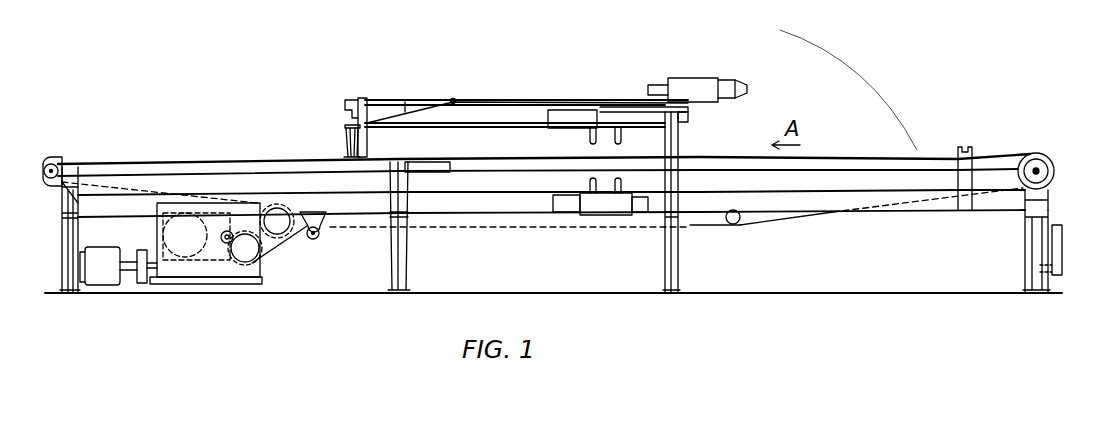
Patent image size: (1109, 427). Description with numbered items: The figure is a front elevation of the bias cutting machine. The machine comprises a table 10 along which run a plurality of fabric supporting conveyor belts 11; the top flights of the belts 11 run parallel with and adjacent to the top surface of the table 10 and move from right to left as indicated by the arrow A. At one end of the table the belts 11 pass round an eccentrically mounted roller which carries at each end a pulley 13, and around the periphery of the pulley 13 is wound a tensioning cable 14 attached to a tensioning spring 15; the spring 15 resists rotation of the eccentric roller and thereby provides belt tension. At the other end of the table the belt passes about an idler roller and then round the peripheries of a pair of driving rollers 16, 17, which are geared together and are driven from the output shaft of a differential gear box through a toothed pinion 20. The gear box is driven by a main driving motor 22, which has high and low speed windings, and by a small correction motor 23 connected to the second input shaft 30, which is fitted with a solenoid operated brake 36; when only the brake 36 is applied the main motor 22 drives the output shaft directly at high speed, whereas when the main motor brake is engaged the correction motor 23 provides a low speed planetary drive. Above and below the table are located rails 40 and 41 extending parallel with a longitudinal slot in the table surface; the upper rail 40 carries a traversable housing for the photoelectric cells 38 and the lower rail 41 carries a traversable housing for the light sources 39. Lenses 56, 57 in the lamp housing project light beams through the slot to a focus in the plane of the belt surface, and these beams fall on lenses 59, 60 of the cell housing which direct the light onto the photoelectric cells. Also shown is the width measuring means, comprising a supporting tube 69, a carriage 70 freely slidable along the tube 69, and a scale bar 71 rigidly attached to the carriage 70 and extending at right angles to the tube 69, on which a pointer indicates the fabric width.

The table 10 is at (167, 170).
The fabric supporting conveyor belts 11 is at (226, 155).
The pulley 13 is at (1027, 155).
The tensioning cable 14 is at (1057, 215).
The tensioning spring 15 is at (1057, 273).
The driving roller 16 is at (274, 238).
The driving roller 17 is at (247, 263).
The toothed pinion 20 is at (222, 245).
The main driving motor 22 is at (173, 228).
The correction motor 23 is at (100, 273).
The second input shaft 30 is at (148, 256).
The solenoid operated brake 36 is at (139, 284).
The photoelectric cells 38 is at (588, 118).
The light sources 39 is at (605, 202).
The upper rail 40 is at (457, 118).
The lower rail 41 is at (572, 205).
The lens 56 is at (590, 184).
The lens 57 is at (621, 184).
The lens 59 is at (590, 137).
The lens 60 is at (621, 137).
The supporting tube 69 is at (738, 90).
The carriage 70 is at (695, 83).
The scale bar 71 is at (635, 100).